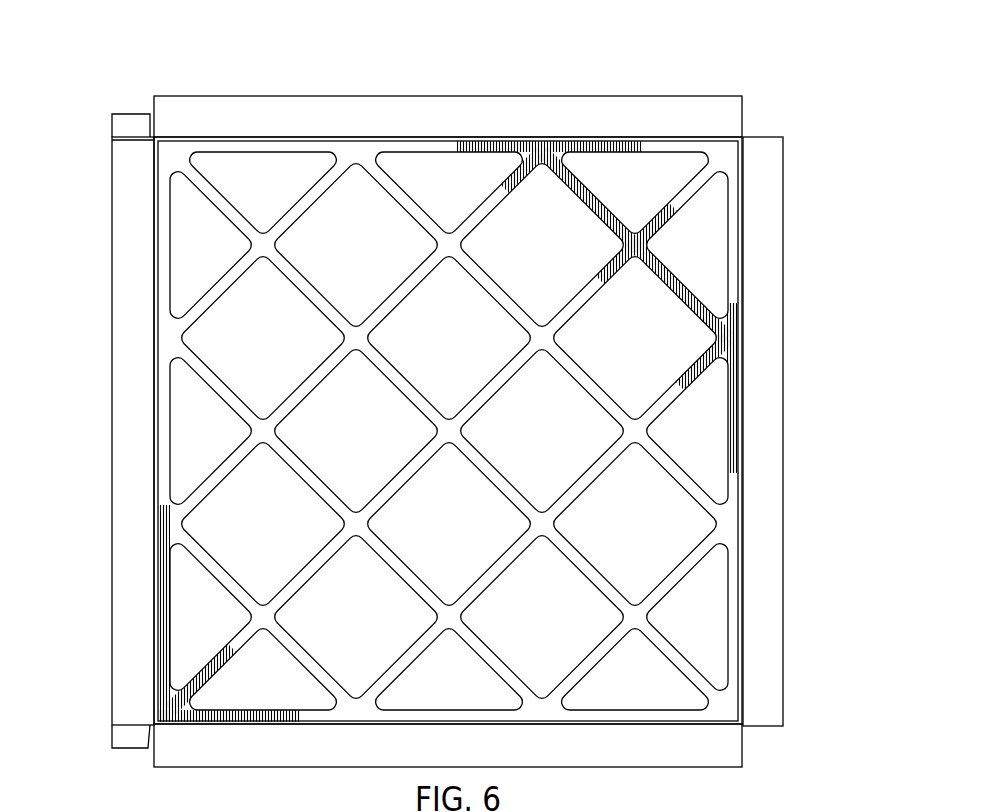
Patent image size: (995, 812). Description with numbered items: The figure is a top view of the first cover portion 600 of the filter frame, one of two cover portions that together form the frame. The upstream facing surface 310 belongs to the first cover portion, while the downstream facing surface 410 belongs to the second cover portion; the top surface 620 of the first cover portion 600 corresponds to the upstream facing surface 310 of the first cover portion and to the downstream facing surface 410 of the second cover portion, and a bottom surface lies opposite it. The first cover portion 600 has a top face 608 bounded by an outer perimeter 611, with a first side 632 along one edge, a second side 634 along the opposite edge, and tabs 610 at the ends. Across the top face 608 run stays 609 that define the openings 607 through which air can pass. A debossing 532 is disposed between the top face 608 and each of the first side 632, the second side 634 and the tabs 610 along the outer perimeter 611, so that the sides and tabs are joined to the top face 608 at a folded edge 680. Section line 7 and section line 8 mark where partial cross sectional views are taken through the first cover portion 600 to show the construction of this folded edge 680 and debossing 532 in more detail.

The first cover portion 600 is at (690, 45).
The first side 632 is at (168, 110).
The top face 608 is at (167, 156).
The upstream facing surface 310 is at (449, 379).
The downstream facing surface 410 is at (351, 153).
The top surface 620 is at (543, 152).
The tabs 610 is at (127, 122).
The debossing 532 is at (112, 137).
The second side 634 is at (125, 338).
The folded edge 680 is at (153, 432).
The outer perimeter 611 is at (733, 630).
The stays 609 is at (290, 263).
The openings 607 is at (240, 347).
The section line 7- 7 is at (122, 272).
The section line 8- 8 is at (713, 273).